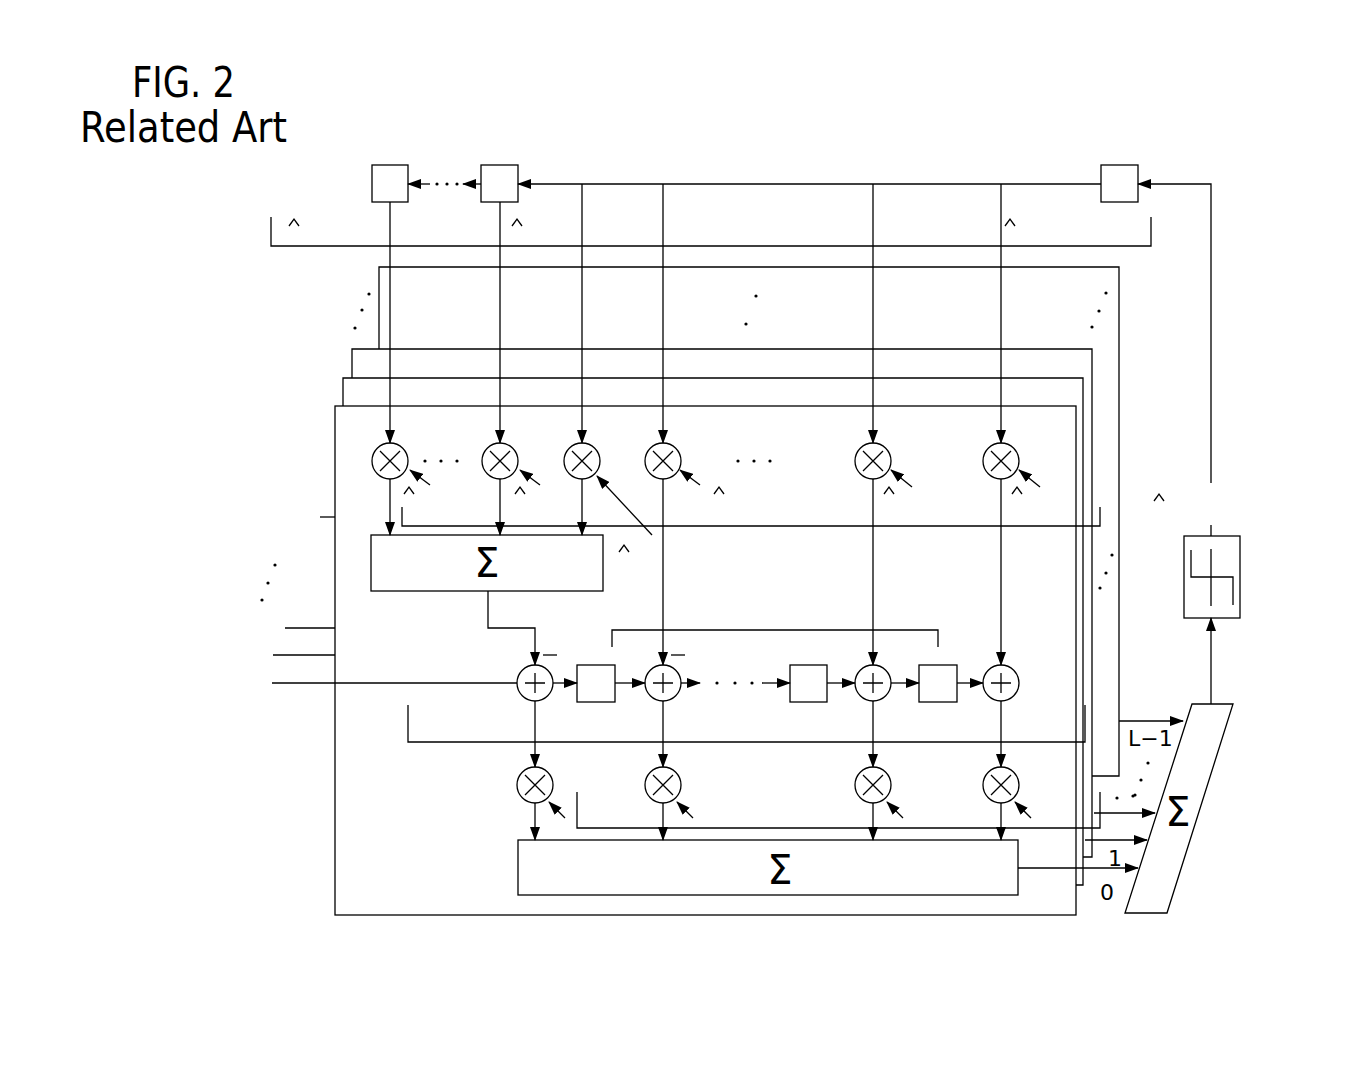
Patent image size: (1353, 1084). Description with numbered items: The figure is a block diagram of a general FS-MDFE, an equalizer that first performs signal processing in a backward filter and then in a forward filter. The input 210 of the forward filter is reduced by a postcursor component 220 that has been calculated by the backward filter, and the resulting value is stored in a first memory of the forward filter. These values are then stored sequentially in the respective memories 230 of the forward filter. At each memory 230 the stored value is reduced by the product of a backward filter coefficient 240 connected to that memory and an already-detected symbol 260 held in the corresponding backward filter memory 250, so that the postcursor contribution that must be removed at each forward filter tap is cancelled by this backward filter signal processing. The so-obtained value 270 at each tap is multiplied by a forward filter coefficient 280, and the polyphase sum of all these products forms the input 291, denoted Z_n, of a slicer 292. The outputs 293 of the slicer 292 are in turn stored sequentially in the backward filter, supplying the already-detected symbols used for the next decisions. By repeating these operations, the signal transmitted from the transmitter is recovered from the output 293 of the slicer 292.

The backward filter memory 250 is at (1118, 145).
The already-detected symbol 260 is at (292, 248).
The output of the slicer 293 is at (1212, 380).
The slicer 292 is at (1233, 558).
The input of the slicer 291 is at (1215, 678).
The backward filter coefficient 240 is at (823, 527).
The memory of the forward filter 230 is at (905, 632).
The postcursor component 220 is at (618, 613).
The input of the forward filter 210 is at (222, 703).
The obtained value 270 is at (447, 745).
The forward filter coefficient 280 is at (1050, 832).